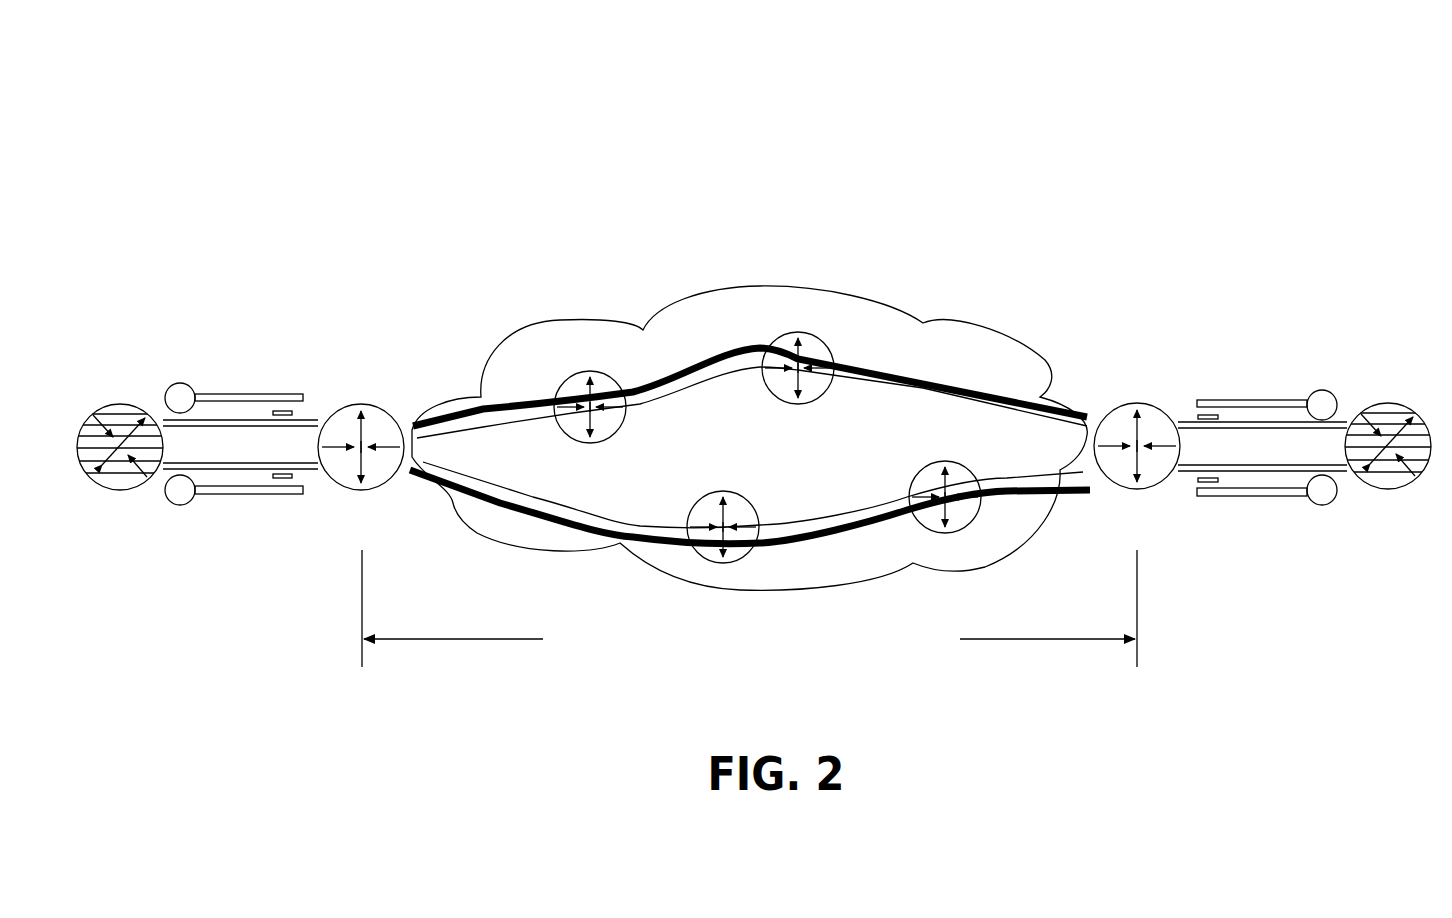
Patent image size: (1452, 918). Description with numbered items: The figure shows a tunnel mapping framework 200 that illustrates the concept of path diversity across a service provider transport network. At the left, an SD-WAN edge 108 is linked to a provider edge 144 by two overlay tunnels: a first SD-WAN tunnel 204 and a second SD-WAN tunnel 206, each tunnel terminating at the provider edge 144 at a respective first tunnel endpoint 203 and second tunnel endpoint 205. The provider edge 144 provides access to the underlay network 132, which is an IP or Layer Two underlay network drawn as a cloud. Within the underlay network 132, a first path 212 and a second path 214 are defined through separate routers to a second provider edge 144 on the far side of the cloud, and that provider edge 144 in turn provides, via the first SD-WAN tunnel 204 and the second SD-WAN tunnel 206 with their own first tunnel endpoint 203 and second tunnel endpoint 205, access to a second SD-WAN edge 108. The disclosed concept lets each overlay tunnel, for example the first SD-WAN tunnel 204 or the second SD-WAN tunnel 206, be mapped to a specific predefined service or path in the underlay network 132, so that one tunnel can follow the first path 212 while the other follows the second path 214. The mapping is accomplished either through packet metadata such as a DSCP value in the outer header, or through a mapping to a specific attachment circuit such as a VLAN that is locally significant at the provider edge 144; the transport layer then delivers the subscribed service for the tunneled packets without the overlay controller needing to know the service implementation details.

The tunnel mapping framework 200 is at (1336, 166).
The SD-WAN edge 108 is at (120, 403).
The provider edge 144 is at (367, 403).
The SD-WAN tunnel 1 endpoint interface 203 is at (298, 412).
The first SD-WAN tunnel 204 is at (270, 330).
The SD-WAN tunnel 2 endpoint interface 205 is at (302, 479).
The second SD-WAN tunnel 206 is at (235, 558).
The first path 212 is at (913, 377).
The second path 214 is at (812, 522).
The underlay network 132 is at (813, 660).